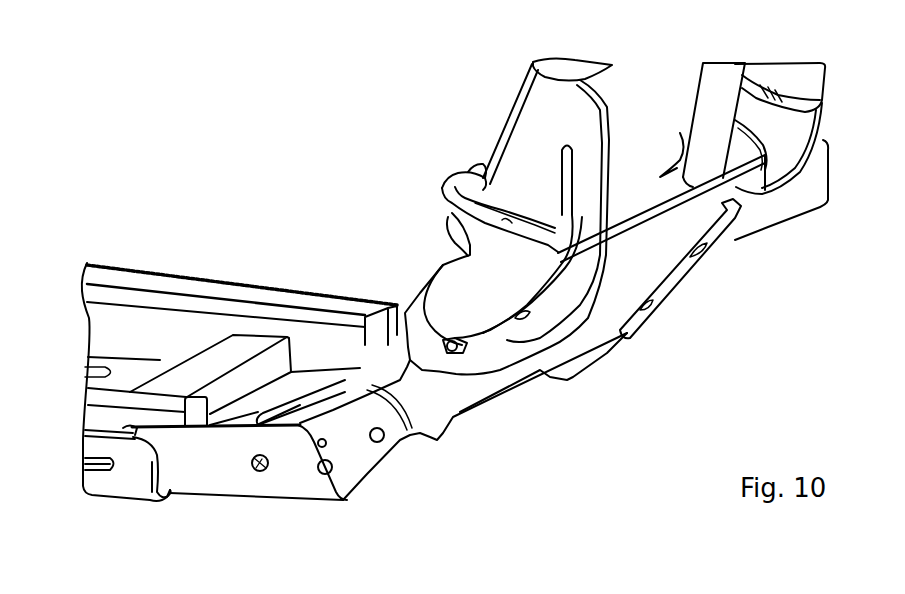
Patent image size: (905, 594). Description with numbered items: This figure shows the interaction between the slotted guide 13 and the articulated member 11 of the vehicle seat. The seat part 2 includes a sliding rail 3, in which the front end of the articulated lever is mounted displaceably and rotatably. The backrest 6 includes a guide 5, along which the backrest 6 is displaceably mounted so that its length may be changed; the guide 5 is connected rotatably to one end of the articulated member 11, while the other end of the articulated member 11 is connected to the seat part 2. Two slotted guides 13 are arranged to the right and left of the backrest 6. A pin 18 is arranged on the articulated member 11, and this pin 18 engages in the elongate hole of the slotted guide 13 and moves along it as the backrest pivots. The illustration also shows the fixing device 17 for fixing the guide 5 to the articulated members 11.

The seat part 2 is at (233, 305).
The sliding rail 3 is at (163, 490).
The guide 5 is at (720, 77).
The backrest 6 is at (555, 70).
The articulated member 11 is at (430, 400).
The slotted guide 13 is at (530, 120).
The link 17 is at (733, 160).
The pin 18 is at (448, 340).